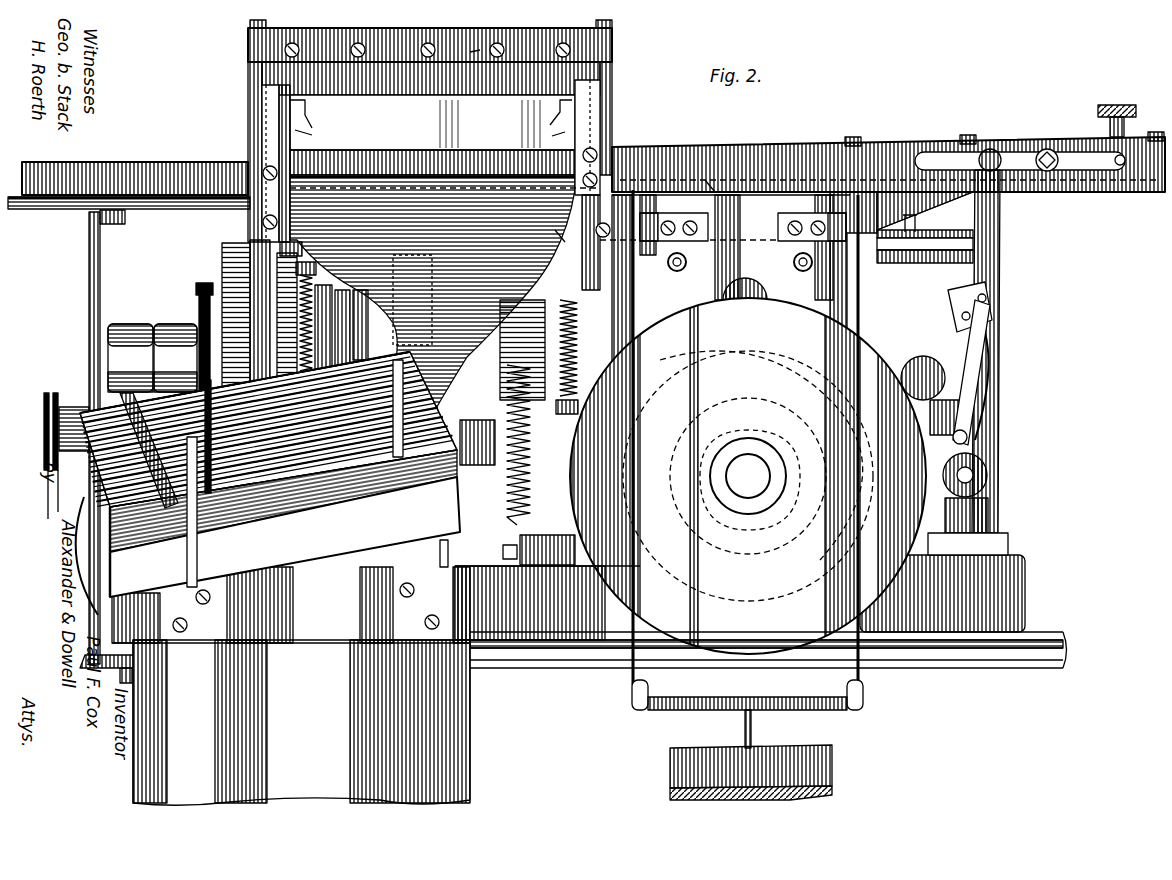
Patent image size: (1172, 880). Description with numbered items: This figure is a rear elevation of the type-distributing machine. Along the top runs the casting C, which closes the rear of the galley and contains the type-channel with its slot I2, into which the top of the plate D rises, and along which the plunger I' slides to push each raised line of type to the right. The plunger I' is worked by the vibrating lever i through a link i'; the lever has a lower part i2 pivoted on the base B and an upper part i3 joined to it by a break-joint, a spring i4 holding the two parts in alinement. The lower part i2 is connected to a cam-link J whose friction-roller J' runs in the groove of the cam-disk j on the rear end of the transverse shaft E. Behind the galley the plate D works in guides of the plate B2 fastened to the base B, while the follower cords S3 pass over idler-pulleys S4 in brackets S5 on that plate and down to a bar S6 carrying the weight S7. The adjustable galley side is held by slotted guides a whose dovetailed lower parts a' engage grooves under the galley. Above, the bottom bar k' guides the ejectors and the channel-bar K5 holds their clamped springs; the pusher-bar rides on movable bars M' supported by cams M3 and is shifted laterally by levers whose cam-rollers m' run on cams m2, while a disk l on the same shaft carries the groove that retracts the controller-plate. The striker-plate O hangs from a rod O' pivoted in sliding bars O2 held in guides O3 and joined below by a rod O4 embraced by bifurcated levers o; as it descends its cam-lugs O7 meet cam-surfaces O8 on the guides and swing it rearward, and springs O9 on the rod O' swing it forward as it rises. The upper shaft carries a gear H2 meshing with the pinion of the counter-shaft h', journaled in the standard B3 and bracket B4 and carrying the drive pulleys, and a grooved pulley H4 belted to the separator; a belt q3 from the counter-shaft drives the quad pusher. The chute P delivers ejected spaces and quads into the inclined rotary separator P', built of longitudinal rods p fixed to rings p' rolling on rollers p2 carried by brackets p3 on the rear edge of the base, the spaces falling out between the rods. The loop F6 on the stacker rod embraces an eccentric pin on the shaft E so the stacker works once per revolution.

The channel-bar K5 is at (540, 32).
The bottom bar k' is at (467, 50).
The striker-plate O is at (432, 267).
The rod O' is at (432, 135).
The sliding bars O2 is at (262, 88).
The guides O3 is at (262, 110).
The rod O4 is at (550, 228).
The cam-lugs O7 is at (430, 137).
The cam-surfaces O8 is at (262, 140).
The springs O9 is at (431, 114).
The bifurcated levers o is at (290, 244).
The loop F6 is at (445, 188).
The casting C is at (745, 160).
The plunger I' is at (957, 145).
The slot I2 is at (702, 178).
The vibrating lever i is at (1054, 319).
The link i' is at (1004, 143).
The lower part of lever i2 is at (984, 398).
The upper part of lever i3 is at (983, 281).
The spring i4 is at (987, 350).
The slotted guides a is at (516, 390).
The lower parts of guides a' is at (925, 257).
The cords S3 is at (866, 313).
The idler-pulleys S4 is at (760, 215).
The brackets S5 is at (812, 217).
The bar S6 is at (747, 691).
The weight S7 is at (800, 742).
The base B is at (1026, 606).
The plate B2 is at (718, 222).
The standard B3 is at (277, 318).
The bracket B4 is at (561, 582).
The plate D is at (766, 292).
The transverse shaft E is at (748, 476).
The cam-link J is at (926, 387).
The friction-roller J' is at (756, 476).
The cam-disk j is at (749, 480).
The gear H2 is at (222, 262).
The grooved pulley H4 is at (196, 298).
The movable bars M' is at (407, 328).
The cams M3 is at (469, 327).
The cam-rollers m' is at (557, 357).
The cams m2 is at (330, 292).
The chute P is at (270, 472).
The inclined rotary separator P' is at (75, 411).
The longitudinal rods p is at (291, 630).
The rings p' is at (302, 483).
The rollers p2 is at (420, 452).
The brackets p3 is at (149, 463).
The belt q3 is at (64, 494).
The counter-shaft h' is at (49, 414).
The disk l is at (517, 465).